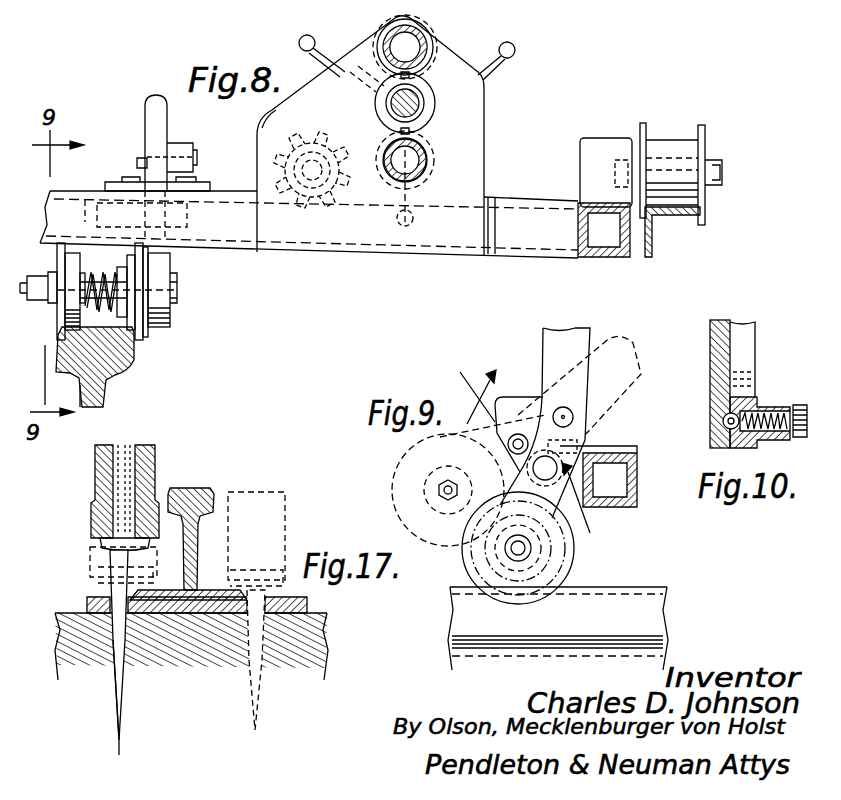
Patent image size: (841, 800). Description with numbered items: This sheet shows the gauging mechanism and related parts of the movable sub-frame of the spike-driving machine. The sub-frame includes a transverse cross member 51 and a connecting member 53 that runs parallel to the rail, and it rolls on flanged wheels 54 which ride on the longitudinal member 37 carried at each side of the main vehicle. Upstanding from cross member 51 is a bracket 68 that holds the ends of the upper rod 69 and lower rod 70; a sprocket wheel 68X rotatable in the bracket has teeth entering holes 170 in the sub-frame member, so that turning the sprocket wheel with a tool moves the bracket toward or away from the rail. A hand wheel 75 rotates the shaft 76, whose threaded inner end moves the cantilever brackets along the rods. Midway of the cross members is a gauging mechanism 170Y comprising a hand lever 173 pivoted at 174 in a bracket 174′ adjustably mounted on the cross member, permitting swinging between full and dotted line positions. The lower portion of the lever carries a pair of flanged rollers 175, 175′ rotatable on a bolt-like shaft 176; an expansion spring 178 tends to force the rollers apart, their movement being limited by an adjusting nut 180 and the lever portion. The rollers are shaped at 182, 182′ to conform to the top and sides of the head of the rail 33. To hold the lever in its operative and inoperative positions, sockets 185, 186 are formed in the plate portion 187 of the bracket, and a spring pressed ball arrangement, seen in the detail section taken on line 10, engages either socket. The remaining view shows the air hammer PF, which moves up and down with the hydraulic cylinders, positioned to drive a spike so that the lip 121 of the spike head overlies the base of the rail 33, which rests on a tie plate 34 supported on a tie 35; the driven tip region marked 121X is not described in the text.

In FIG. 8, the cross member of movable sub-frame 51 is at (524, 210).
In FIG. 9, the cross member of movable sub-frame 51 is at (640, 490).
In FIG. 8, the hand lever 173 is at (163, 124).
In FIG. 9, the hand lever 173 is at (573, 338).
In FIG. 10, the hand lever 173 is at (752, 331).
In FIG. 8, the plate portion 187 is at (192, 146).
In FIG. 9, the plate portion 187 is at (495, 412).
In FIG. 10, the plate portion 187 is at (712, 350).
In FIG. 8, the bracket 68 is at (345, 107).
In FIG. 8, the sprocket wheel 68X is at (285, 140).
In FIG. 8, the hand wheel 75 is at (512, 44).
In FIG. 8, the upper rod 69 is at (415, 38).
In FIG. 8, the shaft 76 is at (412, 105).
In FIG. 8, the lower rod 70 is at (420, 160).
In FIG. 8, the holes 170 is at (346, 200).
In FIG. 8, the connecting member of movable sub-frame 53 is at (606, 258).
In FIG. 8, the flanged wheel 54 is at (702, 148).
In FIG. 8, the longitudinal member 37 is at (653, 234).
In FIG. 8, the adjusting nut 180 is at (38, 280).
In FIG. 8, the flanged roller 175 is at (52, 312).
In FIG. 9, the flanged roller 175 is at (592, 562).
In FIG. 8, the expansion spring 178 is at (130, 350).
In FIG. 8, the bolt-like shaft 176 is at (112, 302).
In FIG. 9, the bolt-like shaft 176 is at (506, 550).
In FIG. 8, the flanged roller 175′ is at (148, 334).
In FIG. 8, the gauging mechanism 170Y is at (200, 272).
In FIG. 9, the gauging mechanism 170Y is at (528, 385).
In FIG. 8, the shaped portion of flanged roller 182′ is at (127, 312).
In FIG. 8, the rail 33 is at (126, 378).
In FIG. 9, the rail 33 is at (450, 613).
In FIG. 17, the rail 33 is at (213, 487).
In FIG. 8, the shaped portion of flanged roller 182 is at (90, 400).
In FIG. 9, the pivot 174 is at (540, 386).
In FIG. 9, the socket 186 is at (513, 434).
In FIG. 10, the socket 186 is at (722, 388).
In FIG. 9, the section line 10— 10 is at (528, 451).
In FIG. 9, the socket 185 is at (575, 420).
In FIG. 10, the socket 185 is at (726, 420).
In FIG. 9, the bracket 174′ is at (477, 490).
In FIG. 17, the air hammer PF is at (93, 488).
In FIG. 17, the tie plate 34 is at (88, 600).
In FIG. 17, the tie 35 is at (320, 632).
In FIG. 17, the lip of spike head 121 is at (150, 550).
In FIG. 17, the punch tip 121X is at (118, 640).